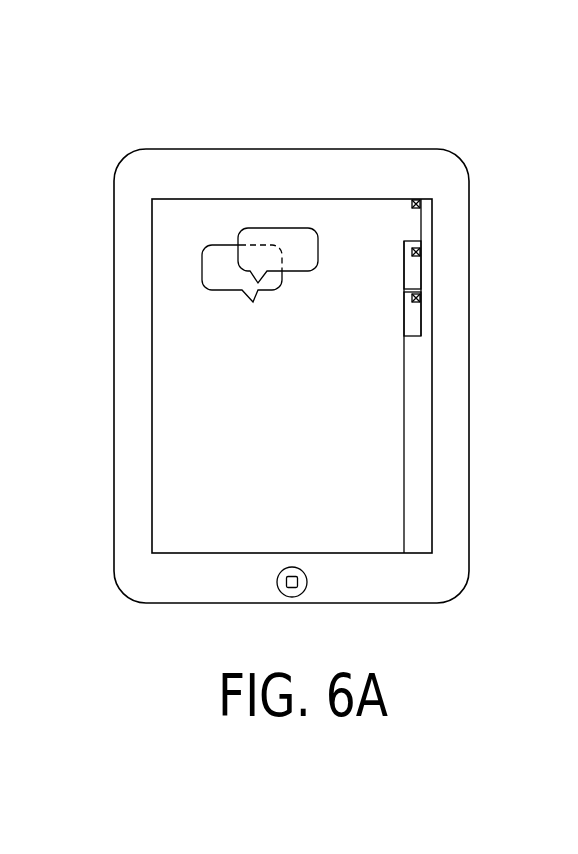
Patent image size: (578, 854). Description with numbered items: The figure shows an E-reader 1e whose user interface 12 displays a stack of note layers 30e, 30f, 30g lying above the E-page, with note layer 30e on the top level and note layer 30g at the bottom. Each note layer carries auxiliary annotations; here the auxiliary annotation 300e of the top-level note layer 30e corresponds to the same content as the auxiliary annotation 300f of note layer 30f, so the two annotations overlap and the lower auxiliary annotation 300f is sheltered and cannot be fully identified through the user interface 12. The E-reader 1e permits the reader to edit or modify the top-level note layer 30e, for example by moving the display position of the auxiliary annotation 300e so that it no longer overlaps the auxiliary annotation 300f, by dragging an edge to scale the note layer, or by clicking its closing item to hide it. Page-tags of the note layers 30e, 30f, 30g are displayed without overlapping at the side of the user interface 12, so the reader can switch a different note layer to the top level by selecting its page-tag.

The E-reader 1e is at (200, 149).
The user interface 12 is at (417, 427).
The note layer 30e is at (412, 223).
The note layer 30f is at (412, 270).
The note layer 30g is at (412, 318).
The auxiliary annotation 300e is at (297, 262).
The auxiliary annotation 300f is at (223, 277).